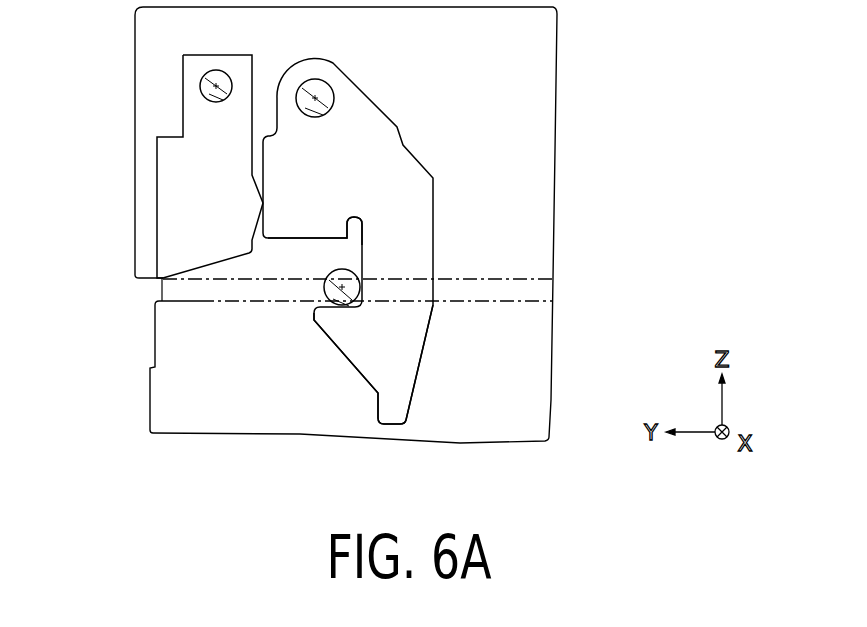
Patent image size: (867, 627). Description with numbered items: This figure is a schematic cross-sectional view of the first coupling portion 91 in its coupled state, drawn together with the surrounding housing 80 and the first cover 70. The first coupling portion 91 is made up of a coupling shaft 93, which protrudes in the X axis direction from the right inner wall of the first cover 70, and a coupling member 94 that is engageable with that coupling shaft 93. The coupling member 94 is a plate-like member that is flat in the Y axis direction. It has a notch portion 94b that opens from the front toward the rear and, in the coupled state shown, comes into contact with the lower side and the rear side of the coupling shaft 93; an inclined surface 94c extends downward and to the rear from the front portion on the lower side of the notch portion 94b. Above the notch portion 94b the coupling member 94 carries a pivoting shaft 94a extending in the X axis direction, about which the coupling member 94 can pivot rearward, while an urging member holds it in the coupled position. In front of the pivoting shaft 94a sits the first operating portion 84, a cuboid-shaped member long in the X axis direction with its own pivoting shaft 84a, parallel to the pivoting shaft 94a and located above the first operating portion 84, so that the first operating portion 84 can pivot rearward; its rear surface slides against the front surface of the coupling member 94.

The first cover 70 is at (154, 373).
The housing 80 is at (135, 45).
The first operating portion 84 is at (157, 216).
The pivoting shaft 84a is at (226, 74).
The first coupling portion 91 is at (396, 104).
The coupling shaft 93 is at (325, 293).
The coupling member 94 is at (433, 244).
The pivoting shaft 94a is at (327, 82).
The notch portion 94b is at (345, 248).
The inclined surface 94c is at (348, 359).